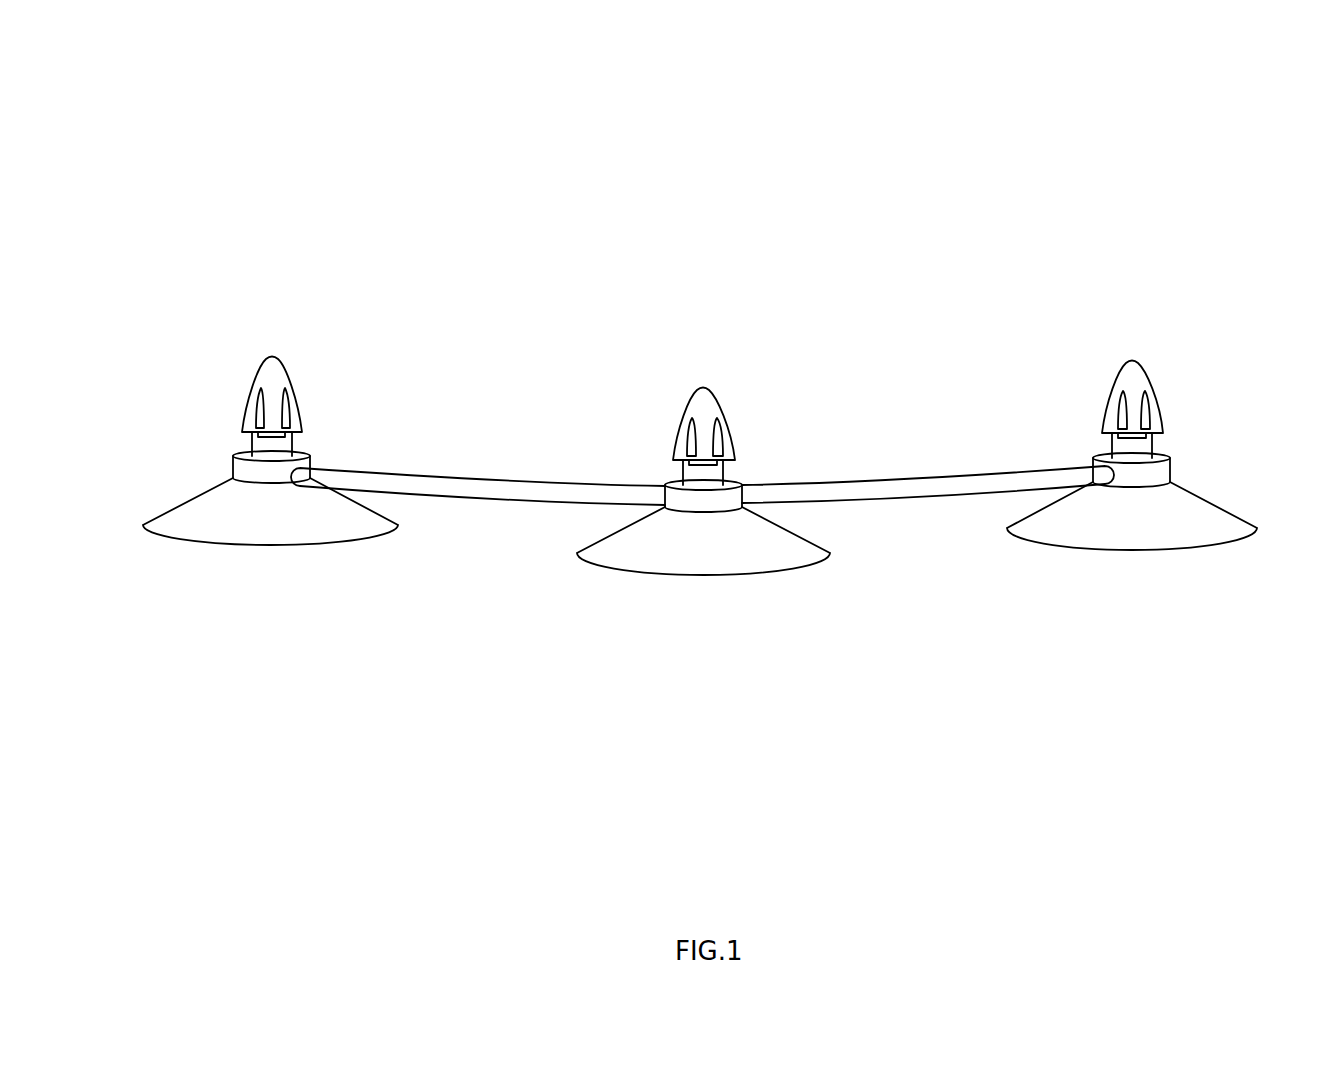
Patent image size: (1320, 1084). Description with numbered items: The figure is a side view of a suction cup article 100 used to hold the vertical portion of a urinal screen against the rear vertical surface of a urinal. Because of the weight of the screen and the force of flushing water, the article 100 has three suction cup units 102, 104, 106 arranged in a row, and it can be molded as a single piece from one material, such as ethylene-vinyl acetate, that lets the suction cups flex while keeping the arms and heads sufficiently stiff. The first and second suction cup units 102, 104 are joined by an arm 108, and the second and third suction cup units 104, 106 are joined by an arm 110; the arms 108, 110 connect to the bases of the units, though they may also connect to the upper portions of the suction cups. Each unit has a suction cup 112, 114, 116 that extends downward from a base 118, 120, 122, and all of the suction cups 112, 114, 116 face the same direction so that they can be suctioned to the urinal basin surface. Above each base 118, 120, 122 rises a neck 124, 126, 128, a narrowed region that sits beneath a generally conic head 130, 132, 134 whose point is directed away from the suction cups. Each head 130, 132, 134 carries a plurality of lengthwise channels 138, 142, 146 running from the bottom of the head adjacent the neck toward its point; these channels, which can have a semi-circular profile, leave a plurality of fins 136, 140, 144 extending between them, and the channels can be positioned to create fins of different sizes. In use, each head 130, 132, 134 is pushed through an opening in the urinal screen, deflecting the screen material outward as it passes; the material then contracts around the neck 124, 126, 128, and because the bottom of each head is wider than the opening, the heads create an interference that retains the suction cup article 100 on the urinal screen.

The suction cup article 100 is at (267, 62).
The suction cup unit 102 is at (258, 562).
The suction cup unit 104 is at (690, 592).
The suction cup unit 106 is at (1119, 566).
The arm 108 is at (465, 478).
The arm 110 is at (922, 480).
The suction cup 112 is at (227, 545).
The suction cup 114 is at (658, 575).
The suction cup 116 is at (1085, 548).
The base 118 is at (233, 467).
The base 120 is at (673, 497).
The base 122 is at (1170, 465).
The neck 124 is at (248, 440).
The neck 126 is at (683, 470).
The neck 128 is at (1110, 450).
The head 130 is at (267, 357).
The head 132 is at (700, 388).
The head 134 is at (1130, 362).
The fins 136 is at (299, 410).
The lengthwise channels 138 is at (287, 417).
The fins 140 is at (730, 442).
The lengthwise channels 142 is at (718, 447).
The fins 144 is at (1160, 413).
The lengthwise channels 146 is at (1147, 418).